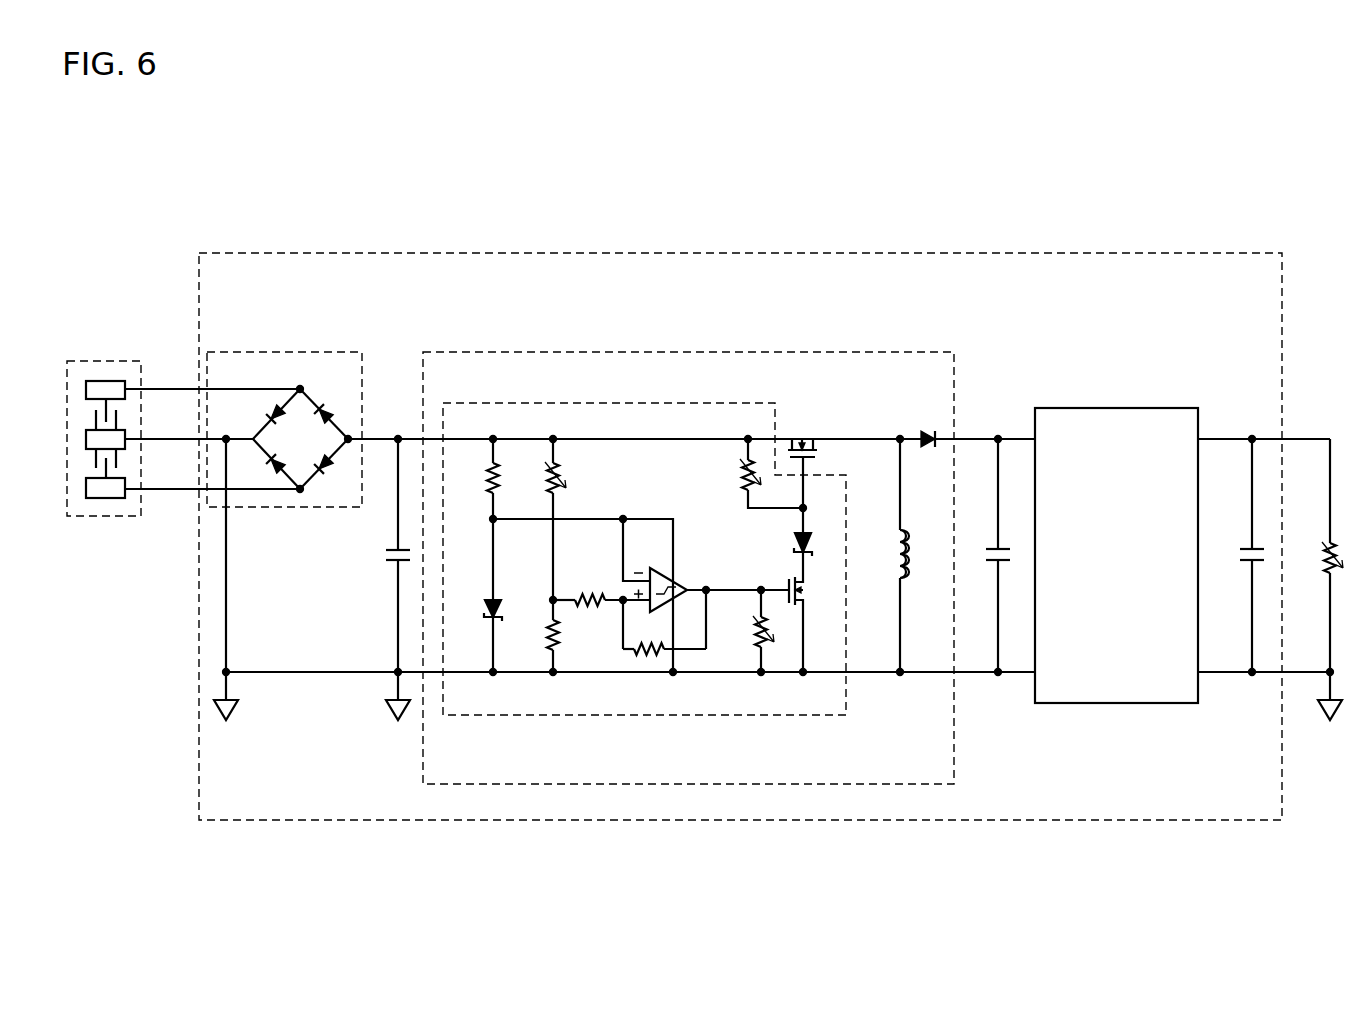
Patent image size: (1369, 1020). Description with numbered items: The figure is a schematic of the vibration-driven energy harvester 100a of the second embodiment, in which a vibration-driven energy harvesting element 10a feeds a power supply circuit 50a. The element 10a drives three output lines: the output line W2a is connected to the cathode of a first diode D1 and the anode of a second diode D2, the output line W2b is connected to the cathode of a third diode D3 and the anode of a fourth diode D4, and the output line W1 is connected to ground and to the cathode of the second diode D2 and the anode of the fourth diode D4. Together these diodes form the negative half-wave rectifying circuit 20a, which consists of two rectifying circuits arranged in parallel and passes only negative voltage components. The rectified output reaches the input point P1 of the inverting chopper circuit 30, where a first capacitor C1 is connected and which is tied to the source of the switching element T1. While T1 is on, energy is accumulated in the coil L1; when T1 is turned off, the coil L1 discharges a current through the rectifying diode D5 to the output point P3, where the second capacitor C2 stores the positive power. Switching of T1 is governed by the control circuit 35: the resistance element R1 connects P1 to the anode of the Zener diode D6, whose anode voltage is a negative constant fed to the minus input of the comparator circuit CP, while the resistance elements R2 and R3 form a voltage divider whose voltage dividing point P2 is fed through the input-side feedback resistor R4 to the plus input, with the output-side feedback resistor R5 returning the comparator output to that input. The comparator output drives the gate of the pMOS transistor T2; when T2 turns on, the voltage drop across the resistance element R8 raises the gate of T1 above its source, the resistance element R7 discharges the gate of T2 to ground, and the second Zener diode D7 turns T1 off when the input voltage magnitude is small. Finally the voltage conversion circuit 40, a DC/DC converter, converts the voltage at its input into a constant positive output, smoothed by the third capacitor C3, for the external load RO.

The vibration-driven energy harvester 100a is at (561, 189).
The power supply circuit 50a is at (778, 248).
The vibration-driven energy harvesting element 10a is at (103, 349).
The negative half-wave rectifying circuit 20a is at (317, 346).
The inverting chopper circuit 30 is at (577, 347).
The control circuit 35 is at (604, 722).
The voltage conversion circuit 40 is at (1094, 402).
The output line W1 is at (189, 423).
The output line W2a is at (212, 373).
The output line W2b is at (212, 474).
The first diode D1 is at (327, 405).
The second diode D2 is at (263, 414).
The third diode D3 is at (327, 472).
The fourth diode D4 is at (266, 464).
The rectifying diode D5 is at (929, 424).
The Zener diode D6 is at (477, 624).
The second Zener diode D7 is at (784, 531).
The input point P1 is at (402, 421).
The voltage dividing point P2 is at (536, 593).
The output point P3 is at (996, 422).
The first capacitor C1 is at (380, 579).
The second capacitor C2 is at (985, 557).
The third capacitor C3 is at (1238, 555).
The resistance element R1 is at (477, 518).
The resistance element R2 is at (538, 518).
The resistance element R3 is at (534, 638).
The input-side feedback resistor R4 is at (601, 585).
The output-side feedback resistor R5 is at (664, 622).
The resistance element R7 is at (746, 633).
The resistance element R8 is at (754, 472).
The comparator circuit CP is at (690, 578).
The switching element T1 is at (802, 455).
The pMOS transistor T2 is at (815, 614).
The coil L1 is at (884, 556).
The external load RO is at (1315, 555).